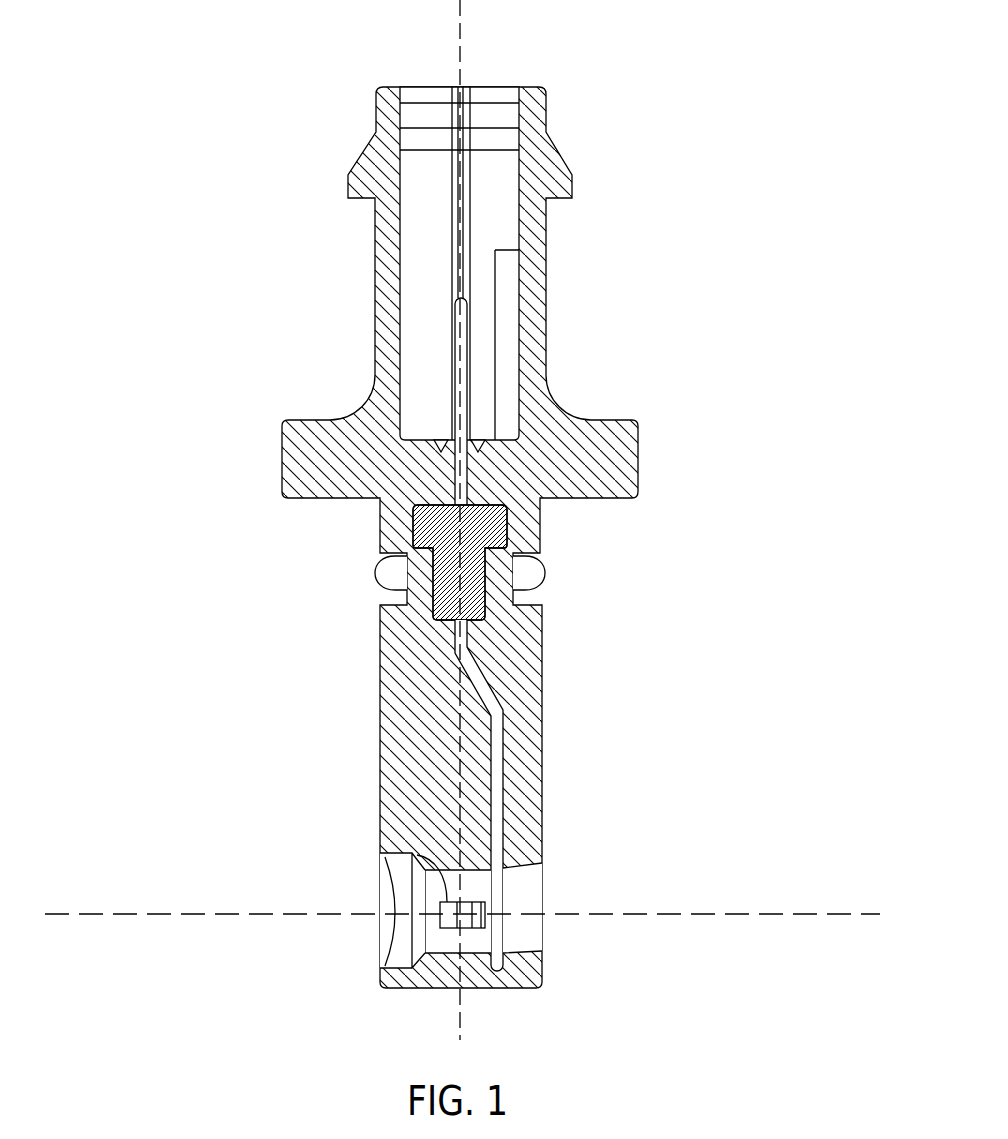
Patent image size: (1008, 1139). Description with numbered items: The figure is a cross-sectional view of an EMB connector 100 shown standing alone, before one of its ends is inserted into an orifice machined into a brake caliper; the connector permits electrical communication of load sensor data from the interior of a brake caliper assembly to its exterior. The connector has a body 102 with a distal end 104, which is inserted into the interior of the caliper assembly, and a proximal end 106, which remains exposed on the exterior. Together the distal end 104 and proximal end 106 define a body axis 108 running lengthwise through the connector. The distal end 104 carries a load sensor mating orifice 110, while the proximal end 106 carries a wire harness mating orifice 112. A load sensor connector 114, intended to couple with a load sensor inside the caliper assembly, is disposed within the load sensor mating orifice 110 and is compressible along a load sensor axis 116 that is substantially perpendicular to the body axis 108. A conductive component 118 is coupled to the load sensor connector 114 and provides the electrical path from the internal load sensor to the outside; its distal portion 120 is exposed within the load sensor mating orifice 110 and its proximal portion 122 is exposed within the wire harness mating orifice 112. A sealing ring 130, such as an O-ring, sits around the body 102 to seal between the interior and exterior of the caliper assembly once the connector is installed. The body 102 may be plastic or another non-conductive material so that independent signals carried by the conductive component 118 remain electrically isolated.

The EMB connector 100 is at (597, 131).
The body 102 is at (608, 433).
The distal end 104 is at (518, 990).
The proximal end 106 is at (542, 88).
The body axis 108 is at (463, 28).
The load sensor mating orifice 110 is at (438, 903).
The wire harness mating orifice 112 is at (433, 211).
The load sensor connector 114 is at (414, 855).
The load sensor axis 116 is at (704, 911).
The conductive component 118 is at (493, 708).
The distal portion 120 is at (492, 892).
The proximal portion 122 is at (462, 337).
The sealing ring 130 is at (535, 570).